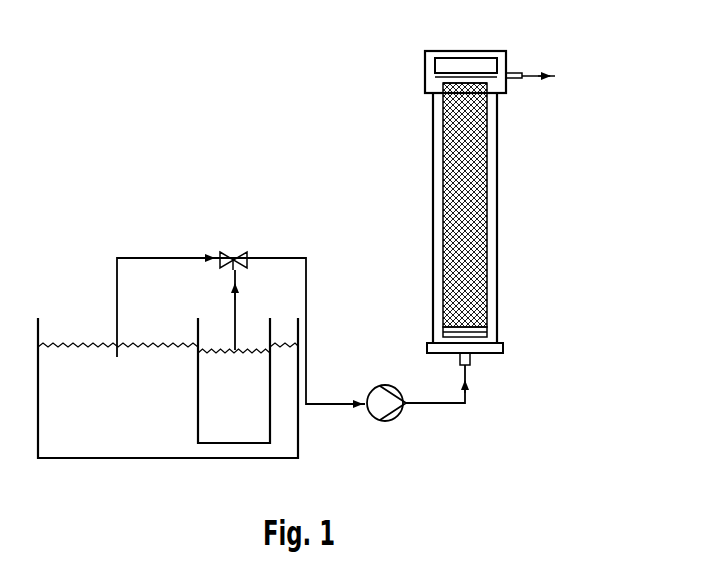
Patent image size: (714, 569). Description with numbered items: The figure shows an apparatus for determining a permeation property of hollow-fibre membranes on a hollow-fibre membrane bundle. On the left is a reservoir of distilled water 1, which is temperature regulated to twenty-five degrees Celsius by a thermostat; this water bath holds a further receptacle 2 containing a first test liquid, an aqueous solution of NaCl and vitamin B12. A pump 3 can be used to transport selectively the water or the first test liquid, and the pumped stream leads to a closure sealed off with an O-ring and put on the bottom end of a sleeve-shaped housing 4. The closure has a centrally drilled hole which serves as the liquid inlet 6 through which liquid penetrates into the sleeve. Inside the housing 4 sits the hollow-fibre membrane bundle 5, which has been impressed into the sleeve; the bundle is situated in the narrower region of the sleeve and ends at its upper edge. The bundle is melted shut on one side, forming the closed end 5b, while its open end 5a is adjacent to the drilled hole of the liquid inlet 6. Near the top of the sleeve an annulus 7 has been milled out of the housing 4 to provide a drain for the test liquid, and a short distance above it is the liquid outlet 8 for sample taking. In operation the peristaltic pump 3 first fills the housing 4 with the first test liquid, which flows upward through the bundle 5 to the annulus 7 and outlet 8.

The reservoir of distilled water 1 is at (96, 445).
The receptacle containing test liquid 2 is at (224, 432).
The pump 3 is at (390, 420).
The housing 4 is at (423, 180).
The hollow-fibre membrane bundle 5 is at (488, 210).
The open end of fibre bundle 5a is at (495, 325).
The closed end of fibre bundle 5b is at (475, 92).
The liquid inlet 6 is at (471, 358).
The annulus 7 is at (430, 92).
The liquid outlet 8 is at (520, 72).